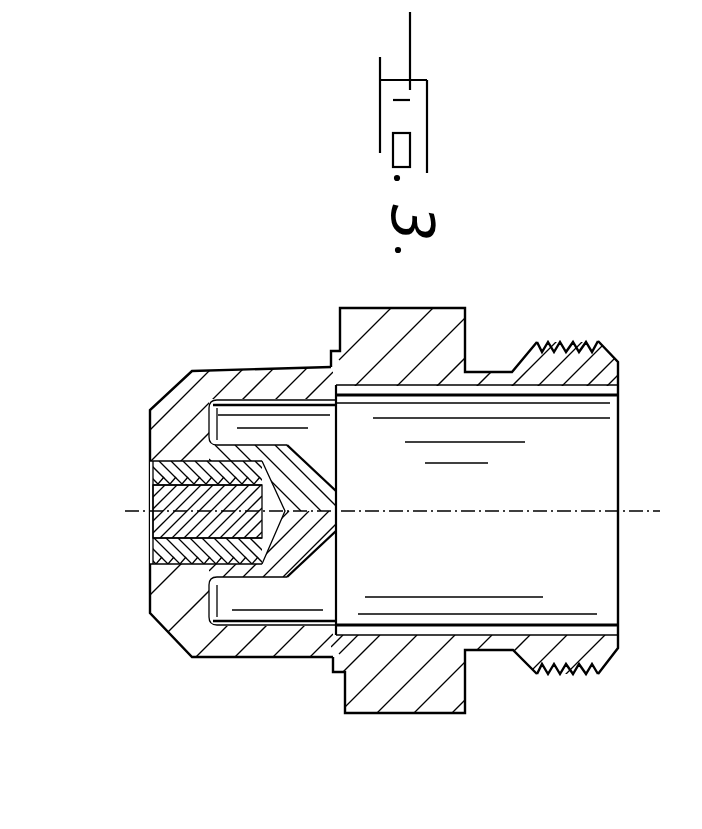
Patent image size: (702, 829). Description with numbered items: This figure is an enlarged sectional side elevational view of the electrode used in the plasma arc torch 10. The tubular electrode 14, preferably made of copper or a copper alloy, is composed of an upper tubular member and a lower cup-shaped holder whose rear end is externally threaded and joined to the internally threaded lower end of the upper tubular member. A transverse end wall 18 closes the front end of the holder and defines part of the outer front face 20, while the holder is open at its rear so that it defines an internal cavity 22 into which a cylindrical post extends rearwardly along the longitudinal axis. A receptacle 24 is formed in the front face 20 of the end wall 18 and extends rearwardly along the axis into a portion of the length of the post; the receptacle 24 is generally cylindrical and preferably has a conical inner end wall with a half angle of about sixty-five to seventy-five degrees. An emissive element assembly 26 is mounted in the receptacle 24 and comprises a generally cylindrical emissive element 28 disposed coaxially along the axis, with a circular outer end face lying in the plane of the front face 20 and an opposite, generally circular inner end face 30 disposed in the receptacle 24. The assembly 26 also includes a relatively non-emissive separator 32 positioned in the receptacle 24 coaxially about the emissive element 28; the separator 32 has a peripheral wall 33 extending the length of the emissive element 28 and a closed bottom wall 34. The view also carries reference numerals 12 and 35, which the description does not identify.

The plasma arc torch 10 is at (382, 455).
The threaded end 12 is at (618, 378).
The tubular electrode 14 is at (160, 468).
The transverse end wall 18 is at (148, 611).
The outer front face 20 is at (150, 431).
The internal cavity 22 is at (592, 600).
The receptacle 24 is at (148, 530).
The emissive element assembly 26 is at (183, 572).
The emissive element 28 is at (147, 496).
The inner end face 30 is at (320, 496).
The separator 32 is at (181, 418).
The peripheral wall 33 is at (308, 536).
The closed bottom wall 34 is at (275, 505).
The tube wall 35 is at (208, 470).